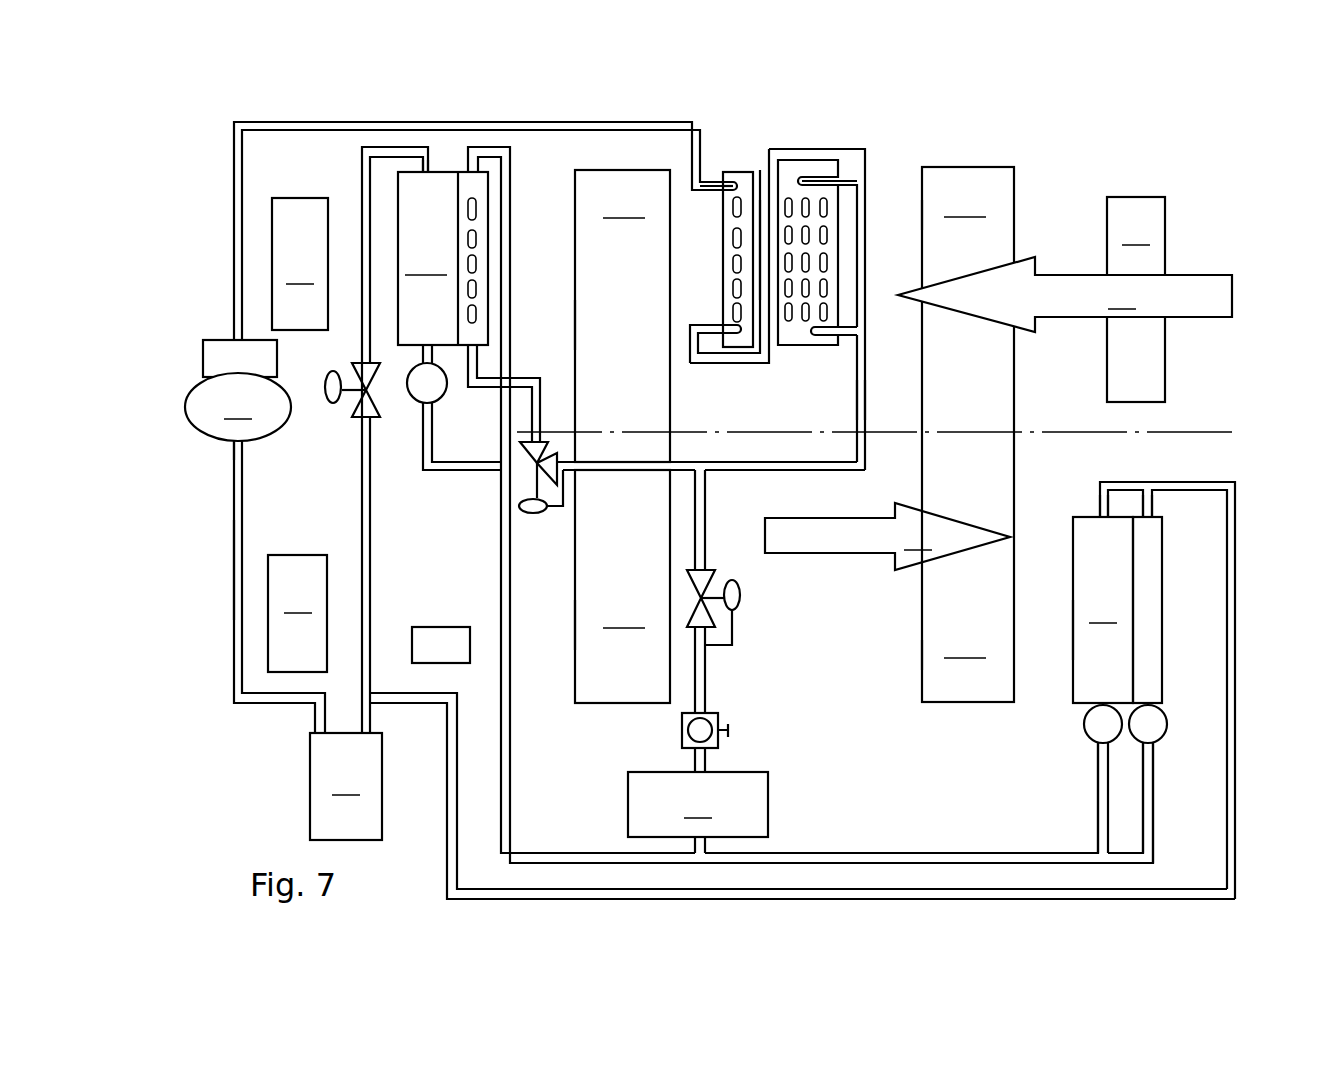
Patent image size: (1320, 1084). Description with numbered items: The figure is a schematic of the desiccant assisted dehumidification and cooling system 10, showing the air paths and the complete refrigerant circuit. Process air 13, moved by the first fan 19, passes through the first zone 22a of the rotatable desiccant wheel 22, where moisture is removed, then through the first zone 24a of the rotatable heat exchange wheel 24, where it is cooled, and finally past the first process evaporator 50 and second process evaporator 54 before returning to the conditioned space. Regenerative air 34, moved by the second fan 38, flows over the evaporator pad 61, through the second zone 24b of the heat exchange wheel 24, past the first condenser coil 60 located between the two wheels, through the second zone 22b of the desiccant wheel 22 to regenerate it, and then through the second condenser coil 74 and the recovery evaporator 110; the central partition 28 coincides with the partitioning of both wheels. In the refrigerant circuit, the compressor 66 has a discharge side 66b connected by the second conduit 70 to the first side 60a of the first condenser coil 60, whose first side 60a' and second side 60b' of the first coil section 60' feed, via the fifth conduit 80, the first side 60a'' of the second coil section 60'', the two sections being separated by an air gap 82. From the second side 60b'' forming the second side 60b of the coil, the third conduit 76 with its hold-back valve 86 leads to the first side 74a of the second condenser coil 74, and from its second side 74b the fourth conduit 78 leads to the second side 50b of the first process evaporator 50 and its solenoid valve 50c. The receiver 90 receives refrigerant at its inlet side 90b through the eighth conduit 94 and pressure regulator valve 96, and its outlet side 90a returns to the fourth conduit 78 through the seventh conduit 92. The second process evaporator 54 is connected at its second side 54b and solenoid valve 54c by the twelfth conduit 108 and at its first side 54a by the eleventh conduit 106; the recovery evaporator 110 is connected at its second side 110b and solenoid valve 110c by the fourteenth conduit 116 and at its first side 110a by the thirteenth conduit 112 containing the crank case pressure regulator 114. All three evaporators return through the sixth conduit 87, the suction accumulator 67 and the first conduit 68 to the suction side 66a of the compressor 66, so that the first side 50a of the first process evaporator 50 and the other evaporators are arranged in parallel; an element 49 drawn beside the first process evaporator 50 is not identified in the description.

The dehumidification and cooling system 10 is at (975, 147).
The process air 13 is at (887, 536).
The first fan 19 is at (297, 613).
The rotatable desiccant wheel 22 is at (658, 412).
The first zone of desiccant wheel 22a is at (610, 625).
The second zone of desiccant wheel 22b is at (610, 271).
The rotatable heat exchange wheel 24 is at (1008, 404).
The first zone of heat exchange wheel 24a is at (954, 651).
The second zone of heat exchange wheel 24b is at (954, 211).
The central partition 28 is at (1160, 428).
The regenerative air 34 is at (1065, 294).
The second fan 38 is at (300, 264).
The housing wall 49 is at (1073, 637).
The first process evaporator 50 is at (1103, 610).
The first side of first process evaporator 50a is at (1095, 496).
The second side of first process evaporator 50b is at (1090, 706).
The solenoid valve of first process evaporator 50c is at (1090, 738).
The second process evaporator 54 is at (1153, 584).
The first side of second process evaporator 54a is at (1143, 503).
The second side of second process evaporator 54b is at (1163, 704).
The solenoid valve of second process evaporator 54c is at (1167, 728).
The first condenser coil 60 is at (809, 204).
The first coil section 60' is at (719, 259).
The second coil section 60'' is at (834, 257).
The first side of first condenser coil 60a is at (716, 124).
The first side of first coil section 60a' is at (678, 128).
The first side of second coil section 60a'' is at (867, 134).
The second side of first condenser coil 60b is at (828, 398).
The second side of first coil section 60b' is at (734, 290).
The second side of second coil section 60b'' is at (857, 294).
The evaporator pad 61 is at (1136, 299).
The compressor 66 is at (238, 407).
The suction side of compressor 66a is at (232, 444).
The discharge side of compressor 66b is at (232, 340).
The suction accumulator 67 is at (346, 786).
The first conduit 68 is at (232, 578).
The second conduit 70 is at (418, 122).
The second condenser coil 74 is at (480, 215).
The first side of second condenser coil 74a is at (478, 355).
The second side of second condenser coil 74b is at (471, 158).
The third conduit 76 is at (790, 470).
The fourth conduit 78 is at (511, 278).
The fifth conduit 80 is at (843, 150).
The air gap 82 is at (760, 170).
The hold-back valve 86 is at (530, 468).
The sixth conduit 87 is at (762, 899).
The receiver 90 is at (698, 804).
The outlet side of receiver 90a is at (706, 848).
The inlet side of receiver 90b is at (712, 760).
The seventh conduit 92 is at (694, 848).
The eighth conduit 94 is at (706, 495).
The pressure regulator valve 96 is at (733, 618).
The eleventh conduit 106 is at (1148, 502).
The twelfth conduit 108 is at (1153, 790).
The recovery evaporator 110 is at (443, 258).
The first side of recovery evaporator 110a is at (434, 165).
The second side of recovery evaporator 110b is at (372, 420).
The solenoid valve of recovery evaporator 110c is at (446, 380).
The thirteenth conduit 112 is at (362, 190).
The crank case pressure regulator 114 is at (354, 368).
The fourteenth conduit 116 is at (462, 436).